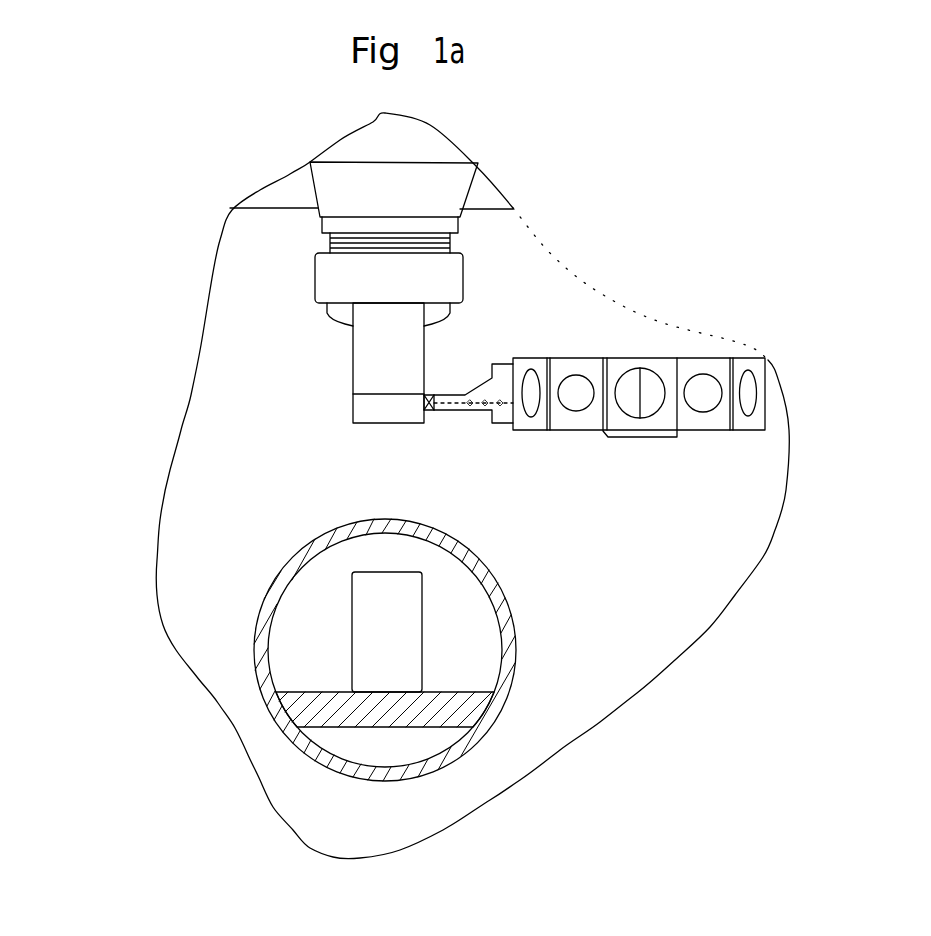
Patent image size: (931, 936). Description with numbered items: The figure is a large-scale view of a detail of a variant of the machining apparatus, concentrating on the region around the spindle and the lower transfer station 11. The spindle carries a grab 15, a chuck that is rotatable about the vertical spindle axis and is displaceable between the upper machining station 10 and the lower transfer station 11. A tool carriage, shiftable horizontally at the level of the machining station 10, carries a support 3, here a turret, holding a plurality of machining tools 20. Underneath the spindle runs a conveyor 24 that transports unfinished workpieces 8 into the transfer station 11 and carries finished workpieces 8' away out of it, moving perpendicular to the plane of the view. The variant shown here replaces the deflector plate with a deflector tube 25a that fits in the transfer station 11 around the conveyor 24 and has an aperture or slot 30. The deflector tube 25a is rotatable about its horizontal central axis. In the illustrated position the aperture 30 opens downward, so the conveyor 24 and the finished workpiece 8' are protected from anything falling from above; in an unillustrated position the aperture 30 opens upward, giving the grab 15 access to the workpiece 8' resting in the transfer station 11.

The support 3 is at (708, 400).
The unfinished workpiece 8 is at (305, 292).
The finished workpiece 8' is at (330, 602).
The machining station 10 is at (247, 407).
The transfer station 11 is at (210, 640).
The grab 15 is at (340, 282).
The machining tools 20 is at (448, 412).
The conveyor 24 is at (280, 697).
The deflector tube 25a is at (519, 626).
The aperture 30 is at (410, 769).